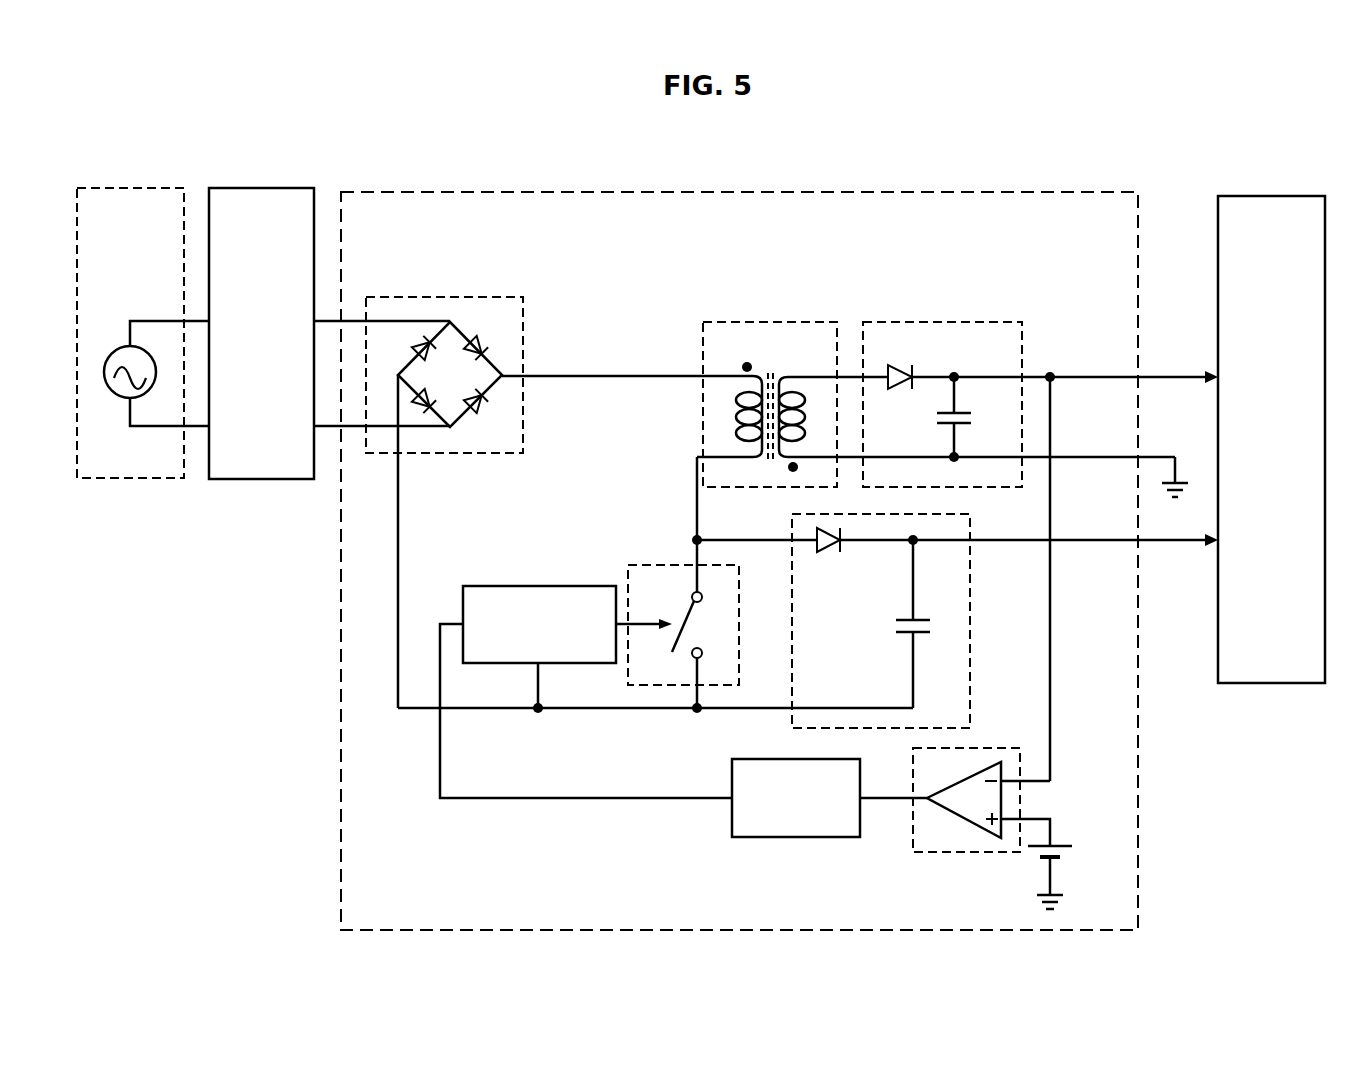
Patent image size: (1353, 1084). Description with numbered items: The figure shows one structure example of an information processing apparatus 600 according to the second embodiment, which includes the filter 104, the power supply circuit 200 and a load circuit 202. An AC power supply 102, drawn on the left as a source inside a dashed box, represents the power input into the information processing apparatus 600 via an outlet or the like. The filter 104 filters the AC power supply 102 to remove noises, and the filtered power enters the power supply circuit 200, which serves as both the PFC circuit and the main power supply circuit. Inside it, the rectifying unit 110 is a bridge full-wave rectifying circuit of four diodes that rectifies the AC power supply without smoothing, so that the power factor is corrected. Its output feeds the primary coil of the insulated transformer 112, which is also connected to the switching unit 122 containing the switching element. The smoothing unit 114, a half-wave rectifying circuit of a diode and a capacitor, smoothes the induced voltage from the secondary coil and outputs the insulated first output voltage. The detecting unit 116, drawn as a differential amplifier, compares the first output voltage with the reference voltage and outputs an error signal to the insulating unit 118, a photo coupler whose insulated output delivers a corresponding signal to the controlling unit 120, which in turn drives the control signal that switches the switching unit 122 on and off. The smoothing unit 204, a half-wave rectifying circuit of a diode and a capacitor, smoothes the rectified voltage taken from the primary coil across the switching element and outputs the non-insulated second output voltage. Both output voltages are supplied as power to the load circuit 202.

The AC power supply 102 is at (129, 188).
The filter 104 is at (261, 188).
The rectifying unit 110 is at (444, 297).
The insulated transformer 112 is at (769, 322).
The smoothing unit 114 is at (954, 322).
The detecting unit 116 is at (964, 852).
The insulating unit 118 is at (796, 838).
The controlling unit 120 is at (538, 586).
The switching unit 122 is at (650, 565).
The power supply circuit 200 is at (1019, 192).
The load circuit 202 is at (1271, 196).
The smoothing unit 204 is at (972, 596).
The information processing apparatus 600 is at (1261, 101).